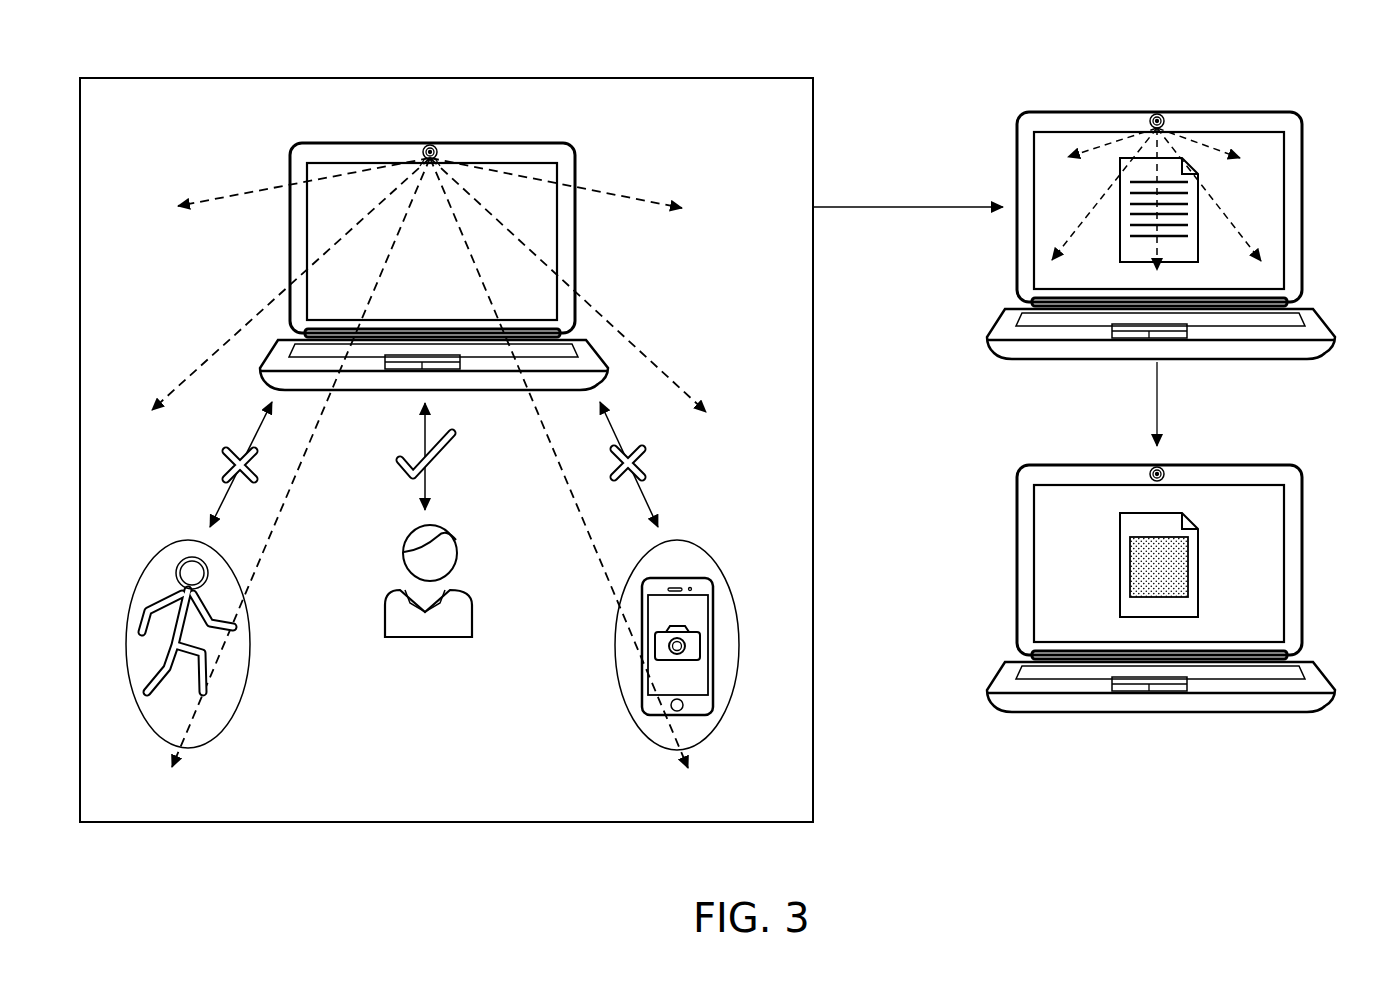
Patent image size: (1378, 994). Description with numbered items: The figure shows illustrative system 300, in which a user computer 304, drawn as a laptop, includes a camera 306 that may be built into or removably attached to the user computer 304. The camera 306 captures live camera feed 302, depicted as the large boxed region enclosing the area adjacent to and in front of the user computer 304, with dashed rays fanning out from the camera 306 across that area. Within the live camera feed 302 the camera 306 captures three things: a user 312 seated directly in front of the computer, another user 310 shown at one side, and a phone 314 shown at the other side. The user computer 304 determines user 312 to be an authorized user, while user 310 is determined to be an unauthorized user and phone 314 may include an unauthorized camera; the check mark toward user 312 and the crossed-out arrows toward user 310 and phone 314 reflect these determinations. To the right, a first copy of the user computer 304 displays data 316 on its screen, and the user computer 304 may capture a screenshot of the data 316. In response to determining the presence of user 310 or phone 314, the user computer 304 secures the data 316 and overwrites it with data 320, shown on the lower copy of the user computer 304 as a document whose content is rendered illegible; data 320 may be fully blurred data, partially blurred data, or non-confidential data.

The system 300 is at (172, 48).
The live camera feed 302 is at (589, 78).
The user computer 304 is at (494, 143).
The camera 306 is at (428, 146).
The user 310 is at (246, 686).
The user 312 is at (430, 638).
The phone 314 is at (617, 688).
The data 316 is at (1198, 252).
The data 320 is at (1188, 573).